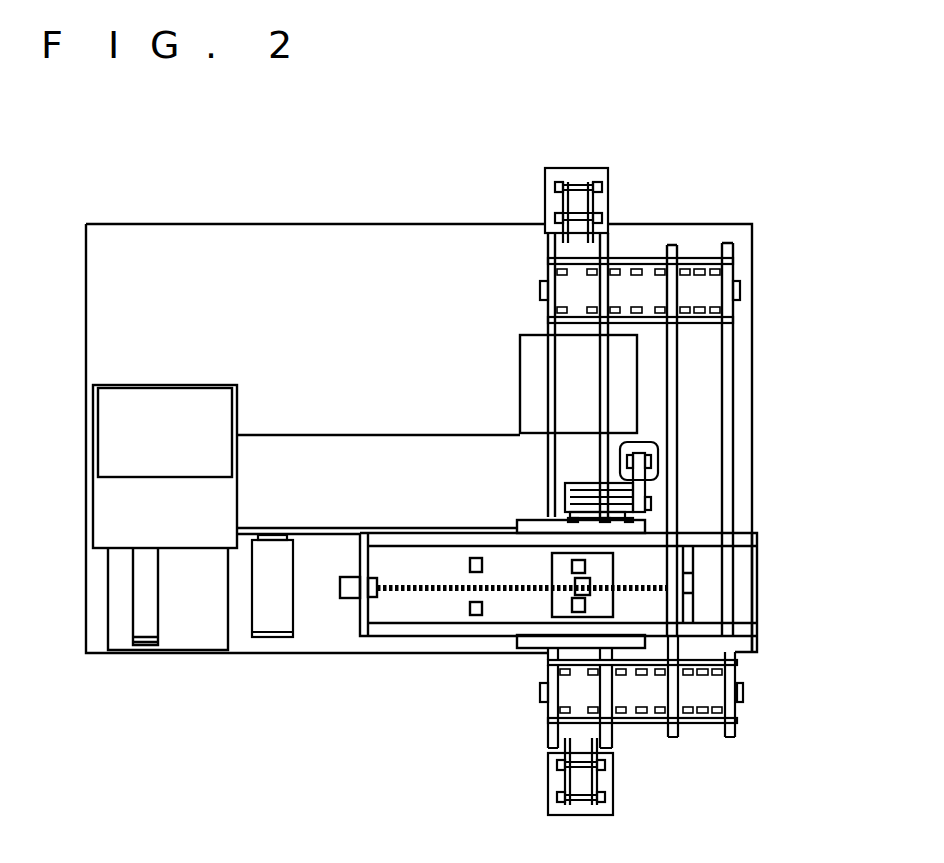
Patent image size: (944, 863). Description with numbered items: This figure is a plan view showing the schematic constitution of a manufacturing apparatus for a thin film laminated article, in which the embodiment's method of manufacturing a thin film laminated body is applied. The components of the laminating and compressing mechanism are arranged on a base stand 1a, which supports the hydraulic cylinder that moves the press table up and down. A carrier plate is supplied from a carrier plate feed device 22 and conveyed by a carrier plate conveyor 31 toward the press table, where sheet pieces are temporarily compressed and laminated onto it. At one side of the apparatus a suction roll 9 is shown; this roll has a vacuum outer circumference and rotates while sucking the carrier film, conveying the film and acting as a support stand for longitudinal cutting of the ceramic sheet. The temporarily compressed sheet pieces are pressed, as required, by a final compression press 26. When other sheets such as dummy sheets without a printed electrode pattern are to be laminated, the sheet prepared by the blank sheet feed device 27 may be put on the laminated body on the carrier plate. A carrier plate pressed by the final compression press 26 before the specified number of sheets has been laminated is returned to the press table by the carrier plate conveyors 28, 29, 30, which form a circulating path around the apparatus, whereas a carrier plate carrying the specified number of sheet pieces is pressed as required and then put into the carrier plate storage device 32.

The base stand 1a is at (742, 237).
The suction roll 9 is at (272, 553).
The carrier plate feed device 22 is at (607, 793).
The final compression press 26 is at (533, 350).
The blank sheet feed device 27 is at (655, 460).
The carrier plate conveyor 28 is at (628, 290).
The carrier plate conveyor 29 is at (700, 380).
The carrier plate conveyor 30 is at (712, 684).
The carrier plate conveyor 31 is at (567, 730).
The carrier plate storage device 32 is at (578, 180).